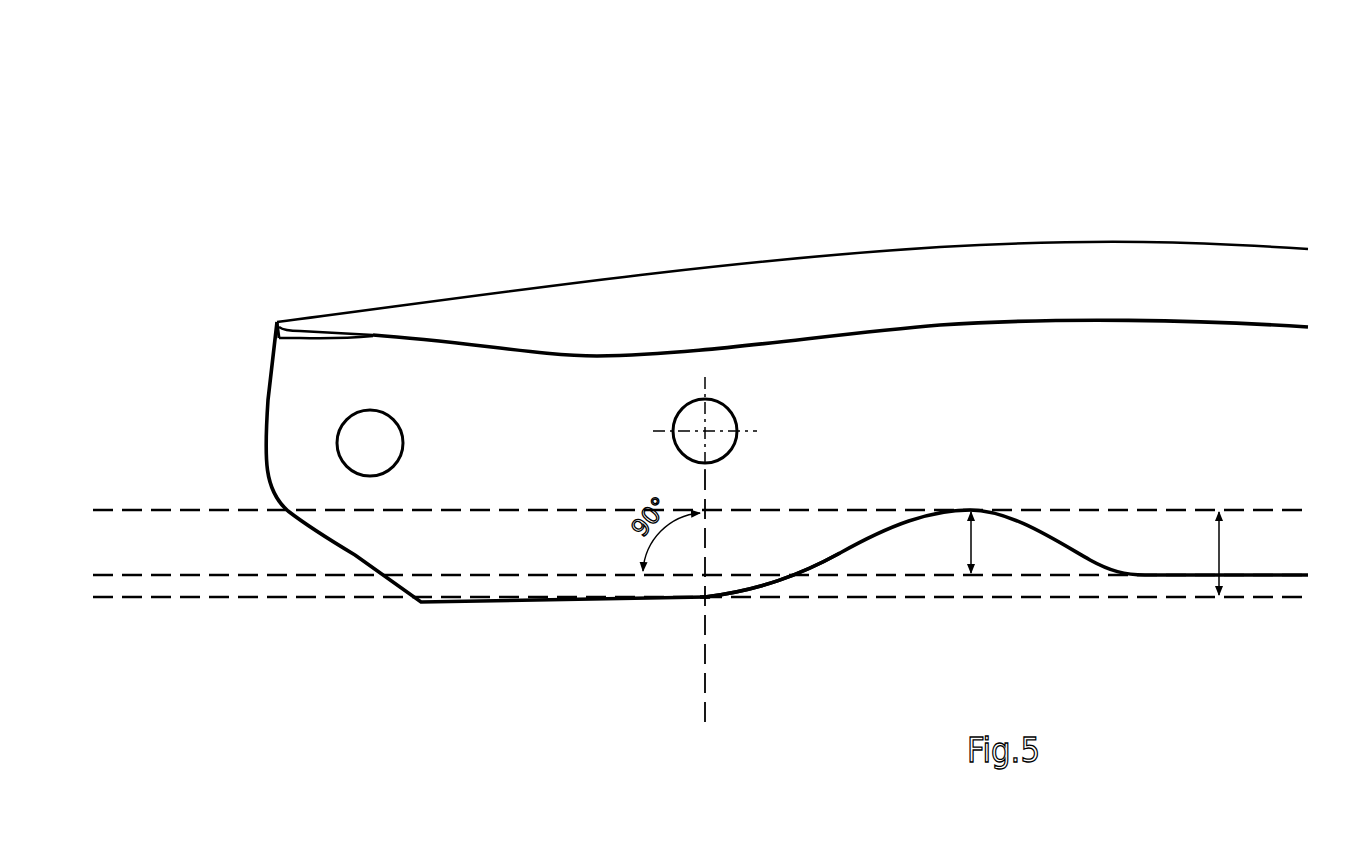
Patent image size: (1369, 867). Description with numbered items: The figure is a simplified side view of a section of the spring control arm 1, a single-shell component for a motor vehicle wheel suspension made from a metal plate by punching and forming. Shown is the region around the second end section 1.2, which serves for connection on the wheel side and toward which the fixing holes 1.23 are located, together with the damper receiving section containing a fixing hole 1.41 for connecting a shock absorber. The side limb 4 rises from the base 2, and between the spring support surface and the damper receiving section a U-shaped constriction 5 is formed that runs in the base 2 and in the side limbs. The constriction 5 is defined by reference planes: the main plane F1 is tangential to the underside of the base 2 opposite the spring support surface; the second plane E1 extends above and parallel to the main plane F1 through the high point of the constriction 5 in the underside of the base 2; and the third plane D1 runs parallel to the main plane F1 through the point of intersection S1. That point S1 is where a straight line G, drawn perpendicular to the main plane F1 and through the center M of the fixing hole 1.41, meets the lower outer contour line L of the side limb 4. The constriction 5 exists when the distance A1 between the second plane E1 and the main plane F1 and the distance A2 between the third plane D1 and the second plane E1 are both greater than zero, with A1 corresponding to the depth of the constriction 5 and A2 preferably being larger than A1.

The spring control arm 1 is at (1023, 176).
The second end section 1.2 is at (325, 372).
The fixing holes 1.23 is at (368, 443).
The fixing hole 1.41 is at (723, 415).
The base 2 is at (1260, 577).
The side limb 4 is at (520, 403).
The U-shaped constriction 5 is at (1006, 548).
The center of the fixing hole M is at (703, 429).
The straight line G is at (706, 553).
The second plane E1 is at (519, 510).
The main plane F1 is at (1056, 575).
The third plane D1 is at (1136, 597).
The lower outer contour line L is at (771, 583).
The point of intersection S1 is at (705, 598).
The distance A1 is at (954, 542).
The distance A2 is at (1201, 553).